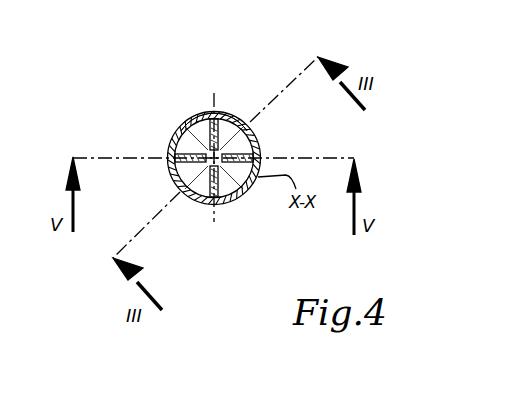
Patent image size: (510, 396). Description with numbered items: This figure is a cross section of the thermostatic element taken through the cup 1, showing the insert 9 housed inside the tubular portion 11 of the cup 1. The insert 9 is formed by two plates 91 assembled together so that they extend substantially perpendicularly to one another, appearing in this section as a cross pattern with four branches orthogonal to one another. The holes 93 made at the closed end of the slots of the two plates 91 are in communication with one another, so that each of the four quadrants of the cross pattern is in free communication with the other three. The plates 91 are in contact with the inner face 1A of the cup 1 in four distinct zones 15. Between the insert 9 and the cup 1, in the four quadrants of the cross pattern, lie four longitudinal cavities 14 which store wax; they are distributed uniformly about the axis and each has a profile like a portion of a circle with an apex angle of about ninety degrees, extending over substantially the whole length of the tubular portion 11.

The cup 1 is at (183, 199).
The inner face 1A is at (257, 146).
The insert 9 is at (243, 16).
The plates 91 is at (172, 118).
The holes 93 is at (198, 117).
The tubular portion 11 is at (246, 197).
The longitudinal cavities 14 is at (180, 185).
The zones 15 is at (222, 203).